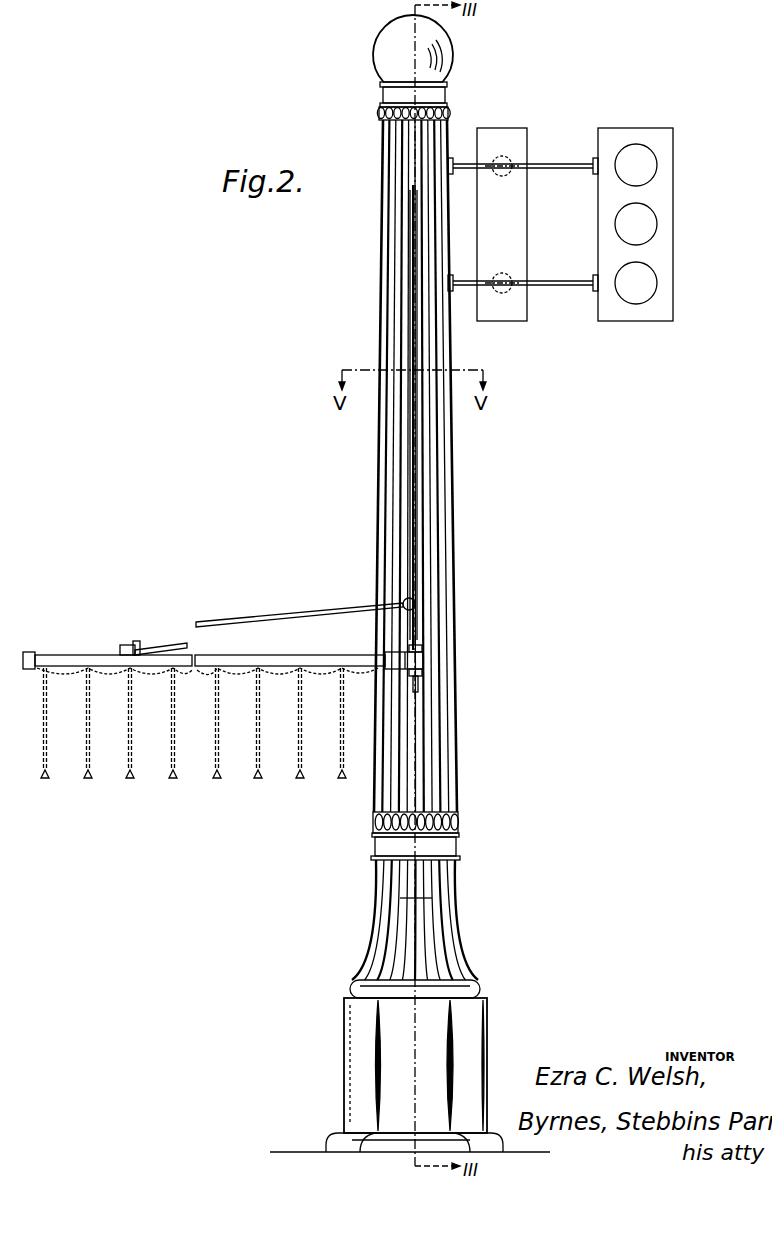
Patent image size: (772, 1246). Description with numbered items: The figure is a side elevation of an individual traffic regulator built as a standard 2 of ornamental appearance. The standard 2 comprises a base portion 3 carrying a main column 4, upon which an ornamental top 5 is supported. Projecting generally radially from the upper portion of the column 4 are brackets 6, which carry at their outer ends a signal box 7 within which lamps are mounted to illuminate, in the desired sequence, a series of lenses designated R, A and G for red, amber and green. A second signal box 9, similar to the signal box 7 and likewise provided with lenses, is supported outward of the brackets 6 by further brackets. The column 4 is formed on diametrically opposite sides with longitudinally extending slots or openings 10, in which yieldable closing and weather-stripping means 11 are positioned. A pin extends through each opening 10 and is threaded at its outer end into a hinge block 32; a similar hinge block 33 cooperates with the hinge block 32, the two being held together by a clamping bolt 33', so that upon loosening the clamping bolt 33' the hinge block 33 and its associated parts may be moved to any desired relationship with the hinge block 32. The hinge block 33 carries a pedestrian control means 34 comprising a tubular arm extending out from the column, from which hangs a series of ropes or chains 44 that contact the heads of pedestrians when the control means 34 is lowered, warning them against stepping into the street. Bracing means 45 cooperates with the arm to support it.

The standard 2 is at (417, 466).
The base portion 3 is at (487, 1033).
The main column 4 is at (381, 456).
The ornamental top 5 is at (452, 62).
The brackets 6 is at (558, 163).
The signal box 7 is at (673, 142).
The signal box 9 is at (508, 128).
The slots or openings 10 is at (425, 506).
The yieldable closing and weather-stripping means 11 is at (418, 471).
The hinge block 32 is at (423, 660).
The hinge block 33 is at (445, 678).
The clamping bolt 33' is at (447, 626).
The pedestrian control means 34 is at (338, 643).
The ropes or chains 44 is at (214, 738).
The bracing means 45 is at (230, 620).